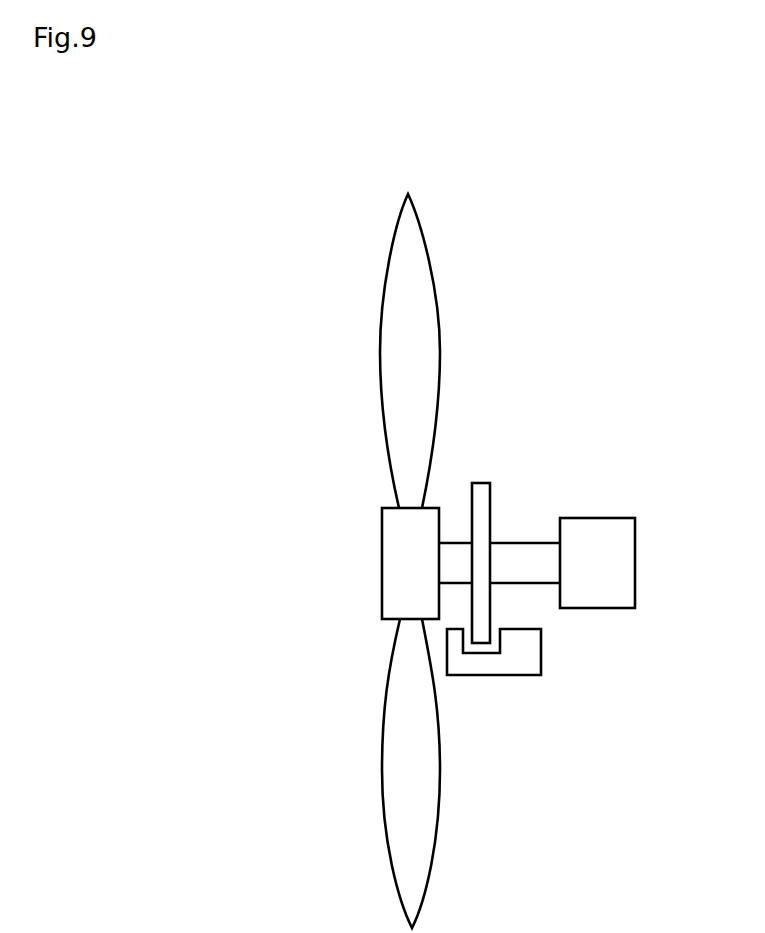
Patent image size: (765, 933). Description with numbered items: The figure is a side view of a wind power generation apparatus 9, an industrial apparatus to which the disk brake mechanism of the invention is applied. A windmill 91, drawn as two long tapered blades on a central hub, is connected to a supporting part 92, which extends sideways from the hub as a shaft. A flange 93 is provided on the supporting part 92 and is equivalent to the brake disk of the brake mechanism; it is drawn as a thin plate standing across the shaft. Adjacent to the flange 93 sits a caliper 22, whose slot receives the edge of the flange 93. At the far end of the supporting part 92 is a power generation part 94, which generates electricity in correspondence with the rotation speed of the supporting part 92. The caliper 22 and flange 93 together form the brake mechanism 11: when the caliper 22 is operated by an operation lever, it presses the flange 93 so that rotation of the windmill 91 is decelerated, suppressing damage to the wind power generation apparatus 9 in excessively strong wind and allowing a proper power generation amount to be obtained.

The wind power generation apparatus 9 is at (488, 827).
The rotation detecting device 11 is at (567, 656).
The caliper 22 is at (501, 675).
The windmill 91 is at (381, 748).
The supporting part 92 is at (523, 543).
The flange 93 is at (481, 483).
The power generation part 94 is at (636, 557).